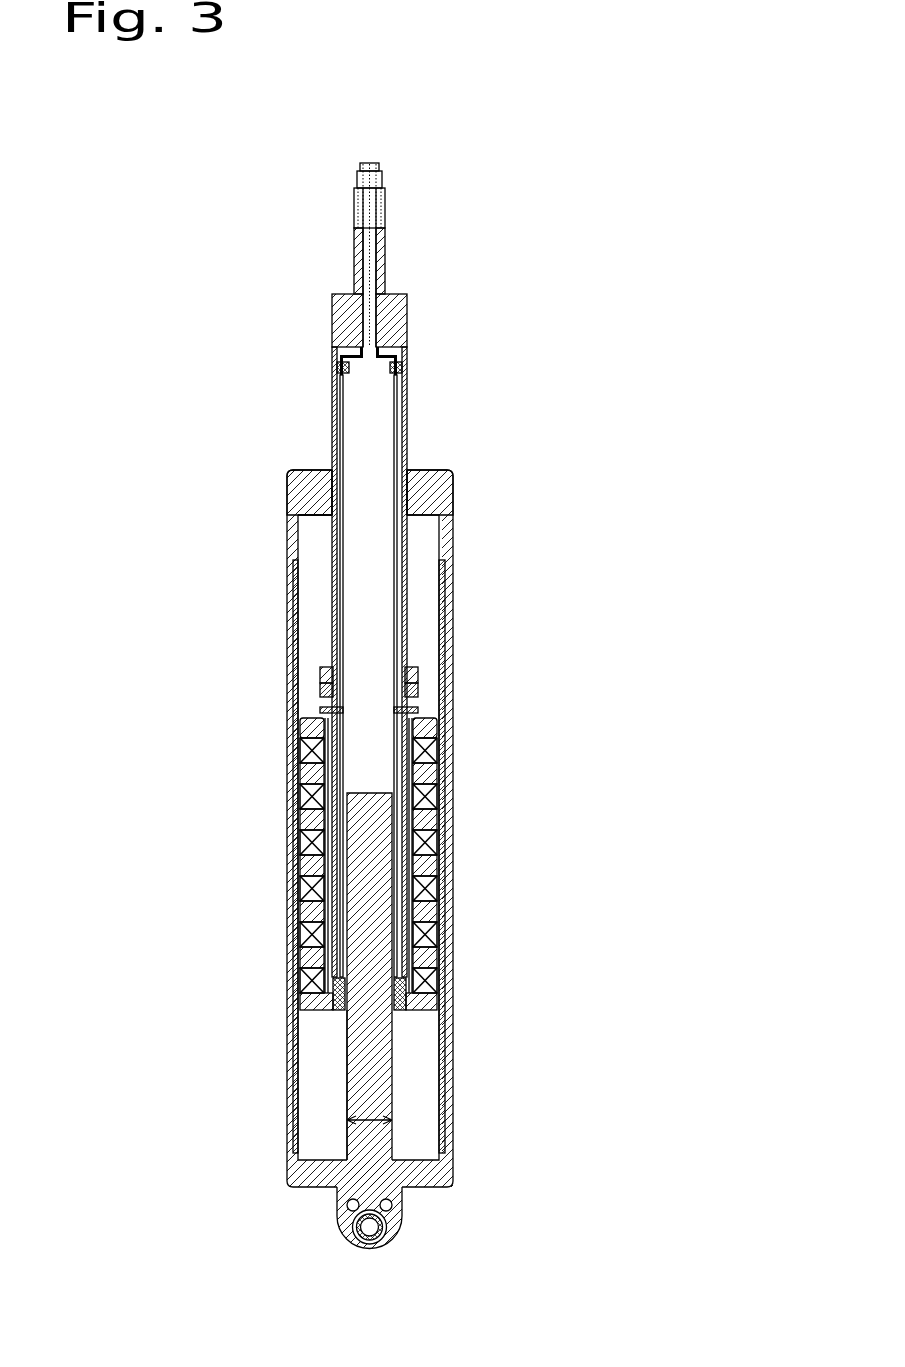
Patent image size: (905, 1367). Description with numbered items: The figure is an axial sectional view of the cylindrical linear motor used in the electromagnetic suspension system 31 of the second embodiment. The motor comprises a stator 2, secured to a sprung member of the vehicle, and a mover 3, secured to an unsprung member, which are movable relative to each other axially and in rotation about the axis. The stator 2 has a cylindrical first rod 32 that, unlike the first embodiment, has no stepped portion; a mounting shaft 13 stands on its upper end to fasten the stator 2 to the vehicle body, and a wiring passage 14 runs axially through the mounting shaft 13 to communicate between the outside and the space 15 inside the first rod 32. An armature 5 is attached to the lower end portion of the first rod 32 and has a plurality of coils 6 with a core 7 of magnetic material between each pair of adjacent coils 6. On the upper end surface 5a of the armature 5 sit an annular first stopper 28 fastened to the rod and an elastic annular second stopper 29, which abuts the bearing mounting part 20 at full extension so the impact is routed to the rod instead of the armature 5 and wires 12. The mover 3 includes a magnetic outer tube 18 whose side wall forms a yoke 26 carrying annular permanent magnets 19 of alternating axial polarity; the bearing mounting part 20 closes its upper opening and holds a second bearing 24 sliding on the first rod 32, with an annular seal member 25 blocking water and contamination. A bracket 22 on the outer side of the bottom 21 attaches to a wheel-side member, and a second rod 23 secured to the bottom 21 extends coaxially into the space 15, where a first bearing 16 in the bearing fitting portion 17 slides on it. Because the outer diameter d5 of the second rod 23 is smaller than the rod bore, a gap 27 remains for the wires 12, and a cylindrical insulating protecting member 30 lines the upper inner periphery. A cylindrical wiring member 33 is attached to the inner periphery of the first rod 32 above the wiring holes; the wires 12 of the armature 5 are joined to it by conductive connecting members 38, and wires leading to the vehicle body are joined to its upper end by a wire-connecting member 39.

The electromagnetic suspension system 31 is at (231, 199).
The stator 2 is at (440, 298).
The mover 3 is at (478, 1104).
The armature 5 is at (289, 870).
The upper end surface of the armature 5a is at (310, 727).
The coil 6 is at (440, 831).
The core 7 is at (440, 861).
The wire 12 is at (359, 176).
The mounting shaft 13 is at (385, 228).
The wiring passage 14 is at (374, 266).
The space 15 is at (385, 448).
The first bearing 16 is at (405, 993).
The bearing fitting portion 17 is at (346, 1022).
The outer tube 18 is at (453, 537).
The permanent magnet 19 is at (446, 592).
The bearing mounting part 20 is at (446, 490).
The bottom 21 is at (423, 1180).
The bracket 22 is at (342, 1217).
The second rod 23 is at (352, 1078).
The second bearing 24 is at (298, 490).
The seal member 25 is at (331, 470).
The yoke 26 is at (453, 642).
The gap 27 is at (296, 600).
The first stopper 28 is at (321, 693).
The second stopper 29 is at (321, 672).
The protecting member 30 is at (344, 520).
The first rod 32 is at (419, 420).
The wiring member 33 is at (340, 410).
The connecting member 38 is at (320, 711).
The wire-connecting member 39 is at (340, 366).
The outer diameter of the second rod d5 is at (380, 1125).